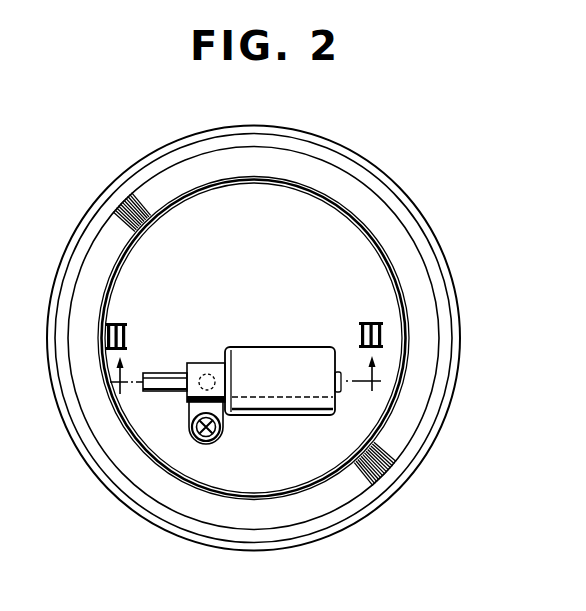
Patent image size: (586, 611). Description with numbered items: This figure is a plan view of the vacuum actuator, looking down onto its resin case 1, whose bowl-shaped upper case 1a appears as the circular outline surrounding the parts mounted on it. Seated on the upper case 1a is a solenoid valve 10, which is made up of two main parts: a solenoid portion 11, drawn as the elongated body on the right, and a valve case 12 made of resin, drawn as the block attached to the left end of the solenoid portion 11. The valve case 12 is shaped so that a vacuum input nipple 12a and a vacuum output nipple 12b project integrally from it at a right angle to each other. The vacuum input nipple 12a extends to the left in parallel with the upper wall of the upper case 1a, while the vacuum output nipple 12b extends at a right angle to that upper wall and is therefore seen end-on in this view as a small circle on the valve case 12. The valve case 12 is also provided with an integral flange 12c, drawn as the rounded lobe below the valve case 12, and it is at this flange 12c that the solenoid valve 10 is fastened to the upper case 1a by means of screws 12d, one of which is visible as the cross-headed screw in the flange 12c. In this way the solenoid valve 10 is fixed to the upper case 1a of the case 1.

The case 1 is at (344, 141).
The upper case 1a is at (363, 247).
The solenoid valve 10 is at (259, 344).
The solenoid portion 11 is at (310, 356).
The valve case 12 is at (207, 362).
The vacuum input nipple 12a is at (167, 373).
The vacuum output nipple 12b is at (212, 374).
The flange 12c is at (195, 408).
The screws 12d is at (221, 428).